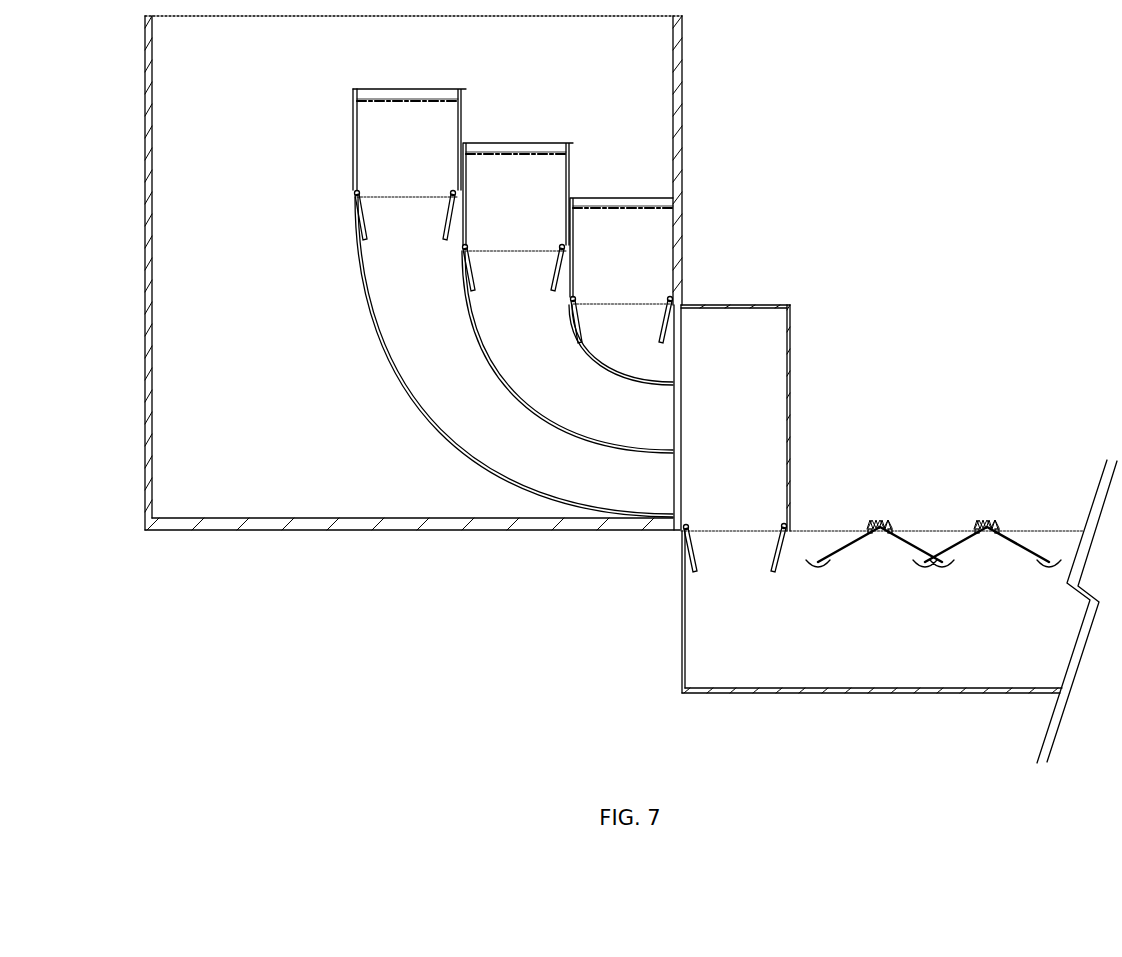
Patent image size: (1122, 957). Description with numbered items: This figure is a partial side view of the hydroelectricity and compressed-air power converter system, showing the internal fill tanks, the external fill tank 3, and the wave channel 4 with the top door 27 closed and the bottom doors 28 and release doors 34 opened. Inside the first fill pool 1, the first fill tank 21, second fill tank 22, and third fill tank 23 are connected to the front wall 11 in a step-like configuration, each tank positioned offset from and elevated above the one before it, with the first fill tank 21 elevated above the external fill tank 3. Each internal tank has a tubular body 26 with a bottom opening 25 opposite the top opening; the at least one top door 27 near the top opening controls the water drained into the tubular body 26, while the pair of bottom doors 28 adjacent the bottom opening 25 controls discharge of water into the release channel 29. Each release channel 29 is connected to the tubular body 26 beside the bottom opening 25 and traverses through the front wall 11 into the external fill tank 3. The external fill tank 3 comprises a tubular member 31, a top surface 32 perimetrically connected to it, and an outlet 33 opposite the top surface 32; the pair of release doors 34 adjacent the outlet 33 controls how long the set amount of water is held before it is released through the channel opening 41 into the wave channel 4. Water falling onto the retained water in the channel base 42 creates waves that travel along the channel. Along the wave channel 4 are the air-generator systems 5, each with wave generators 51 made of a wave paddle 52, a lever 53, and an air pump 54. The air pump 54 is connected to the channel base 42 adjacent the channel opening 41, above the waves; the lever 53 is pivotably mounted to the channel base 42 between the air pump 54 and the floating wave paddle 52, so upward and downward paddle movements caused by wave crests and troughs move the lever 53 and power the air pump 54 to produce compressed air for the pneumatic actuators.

The first fill pool 1 is at (110, 173).
The front wall 11 is at (682, 112).
The first fill tank 21 is at (611, 158).
The second fill tank 22 is at (507, 98).
The third fill tank 23 is at (406, 66).
The bottom opening 25 is at (391, 193).
The tubular body 26 is at (352, 135).
The top door 27 is at (360, 96).
The pair of bottom doors 28 is at (364, 241).
The release channel 29 is at (383, 360).
The external fill tank 3 is at (790, 268).
The tubular member 31 is at (791, 415).
The top surface 32 is at (730, 304).
The outlet 33 is at (717, 536).
The pair of release doors 34 is at (700, 567).
The wave channel 4 is at (922, 705).
The channel opening 41 is at (696, 599).
The channel base 42 is at (745, 695).
The air-generator system 5 is at (967, 455).
The wave generator 51 is at (880, 484).
The wave paddle 52 is at (818, 566).
The lever 53 is at (843, 550).
The air pump 54 is at (886, 520).